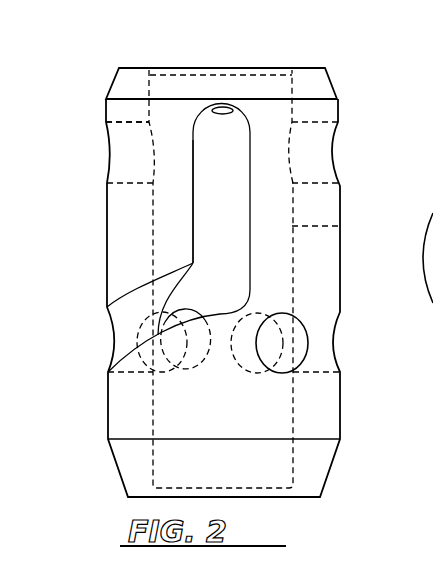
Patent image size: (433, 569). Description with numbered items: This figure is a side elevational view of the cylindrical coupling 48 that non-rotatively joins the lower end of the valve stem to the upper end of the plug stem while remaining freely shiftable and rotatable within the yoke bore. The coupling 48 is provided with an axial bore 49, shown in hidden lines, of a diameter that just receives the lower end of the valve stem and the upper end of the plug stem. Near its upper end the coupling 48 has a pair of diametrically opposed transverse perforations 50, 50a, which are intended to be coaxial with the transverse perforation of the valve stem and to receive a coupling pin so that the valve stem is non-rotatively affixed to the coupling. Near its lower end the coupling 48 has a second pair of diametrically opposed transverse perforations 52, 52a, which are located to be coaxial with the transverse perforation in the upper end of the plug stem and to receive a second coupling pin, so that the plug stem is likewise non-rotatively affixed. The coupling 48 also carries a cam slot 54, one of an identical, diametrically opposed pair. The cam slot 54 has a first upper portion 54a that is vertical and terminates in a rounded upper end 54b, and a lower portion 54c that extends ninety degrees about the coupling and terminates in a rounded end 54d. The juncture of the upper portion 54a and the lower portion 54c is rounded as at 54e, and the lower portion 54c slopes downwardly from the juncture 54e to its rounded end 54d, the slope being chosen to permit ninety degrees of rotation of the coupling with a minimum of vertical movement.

The cylindrical coupling 48 is at (340, 188).
The axial bore 49 is at (340, 226).
The transverse perforation 50 is at (340, 123).
The transverse perforation 50a is at (150, 122).
The transverse perforation 52 is at (300, 343).
The transverse perforation 52a is at (185, 312).
The cam slot 54 is at (195, 148).
The cam slot upper portion 54a is at (194, 196).
The rounded upper end 54b is at (230, 108).
The cam slot lower portion 54c is at (133, 302).
The rounded end 54d is at (115, 342).
The rounded juncture 54e is at (249, 298).